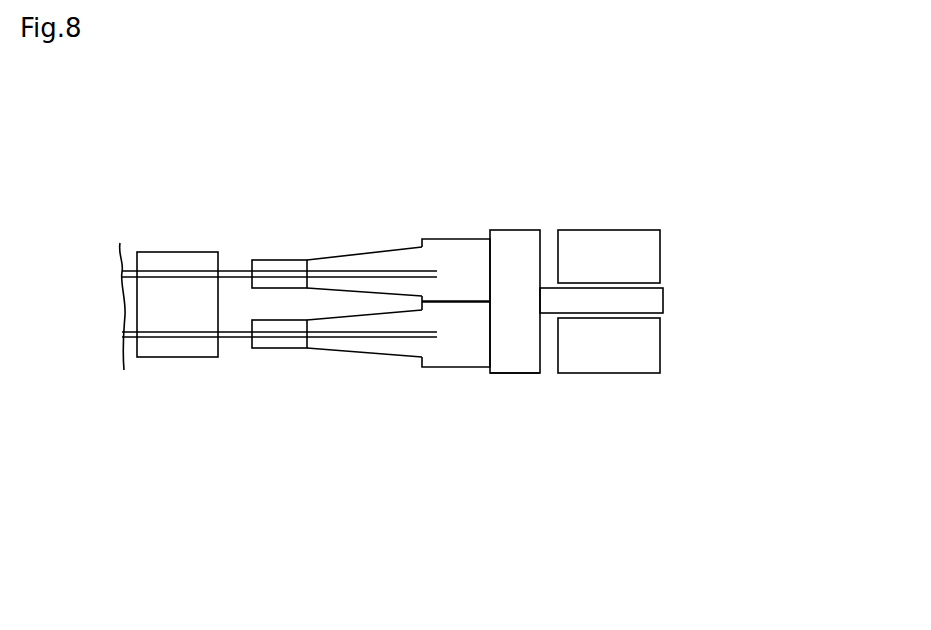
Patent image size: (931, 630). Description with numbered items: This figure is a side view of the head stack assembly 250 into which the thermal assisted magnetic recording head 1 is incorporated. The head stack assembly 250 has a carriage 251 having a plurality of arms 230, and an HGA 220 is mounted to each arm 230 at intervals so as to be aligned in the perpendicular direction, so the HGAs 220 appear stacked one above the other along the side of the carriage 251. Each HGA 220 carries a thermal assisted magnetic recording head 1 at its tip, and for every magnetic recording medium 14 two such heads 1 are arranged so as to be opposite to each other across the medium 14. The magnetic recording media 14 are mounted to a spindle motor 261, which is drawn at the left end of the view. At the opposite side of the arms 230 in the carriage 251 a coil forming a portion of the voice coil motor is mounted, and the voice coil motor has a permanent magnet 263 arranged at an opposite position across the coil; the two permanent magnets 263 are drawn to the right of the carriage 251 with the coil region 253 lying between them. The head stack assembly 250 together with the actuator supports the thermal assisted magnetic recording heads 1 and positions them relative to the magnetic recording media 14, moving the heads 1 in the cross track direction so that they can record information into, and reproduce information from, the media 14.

The thermal assisted magnetic recording head 1 is at (250, 260).
The magnetic recording medium 14 is at (229, 264).
The HGA 220 is at (355, 245).
The arm 230 is at (434, 239).
The head stack assembly 250 is at (513, 207).
The carriage 251 is at (514, 373).
The alignment sleeve 253 is at (658, 300).
The spindle motor 261 is at (157, 252).
The permanent magnet 263 is at (603, 230).